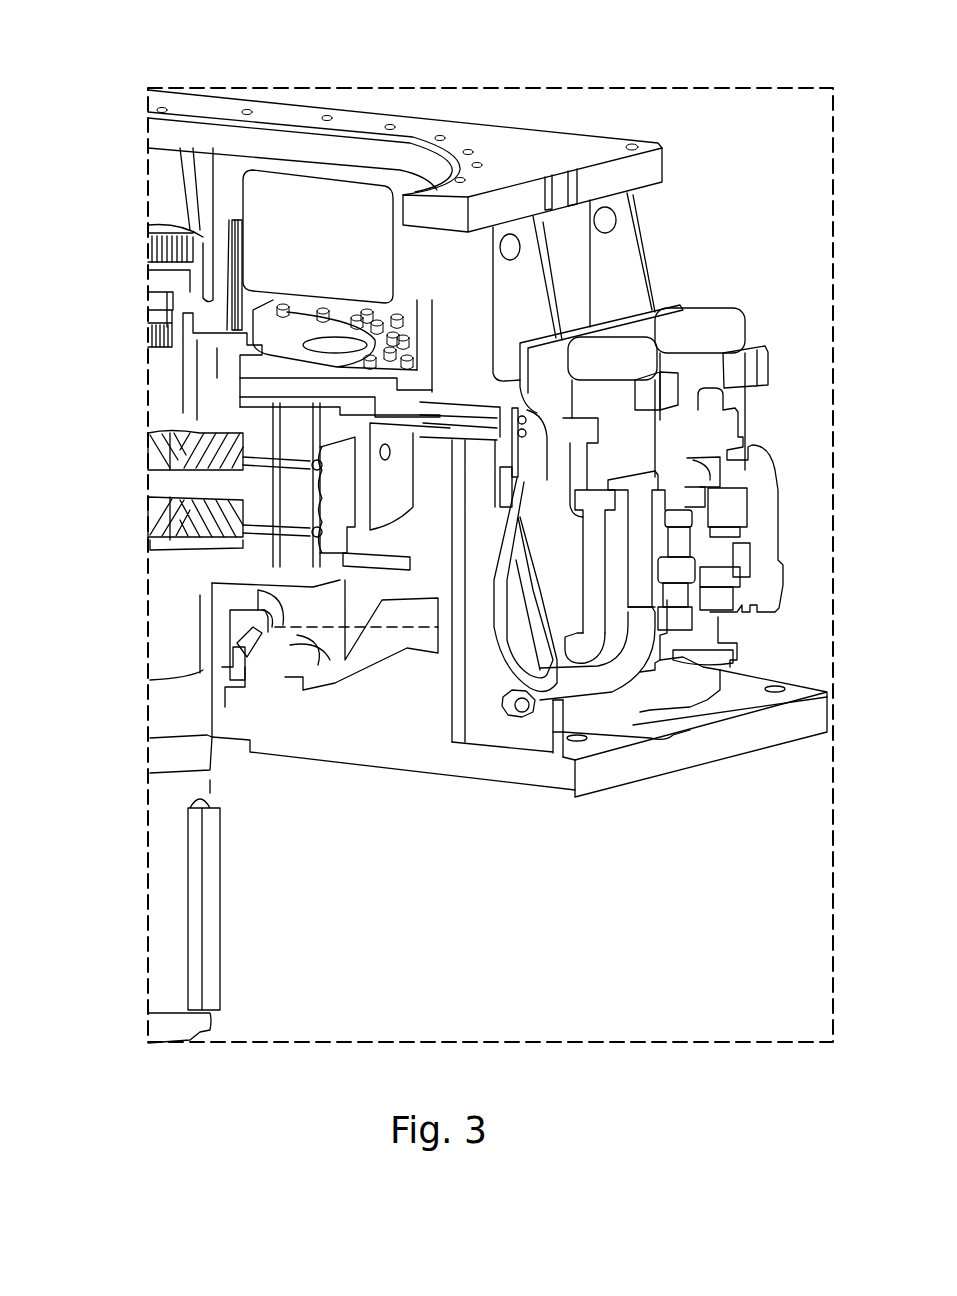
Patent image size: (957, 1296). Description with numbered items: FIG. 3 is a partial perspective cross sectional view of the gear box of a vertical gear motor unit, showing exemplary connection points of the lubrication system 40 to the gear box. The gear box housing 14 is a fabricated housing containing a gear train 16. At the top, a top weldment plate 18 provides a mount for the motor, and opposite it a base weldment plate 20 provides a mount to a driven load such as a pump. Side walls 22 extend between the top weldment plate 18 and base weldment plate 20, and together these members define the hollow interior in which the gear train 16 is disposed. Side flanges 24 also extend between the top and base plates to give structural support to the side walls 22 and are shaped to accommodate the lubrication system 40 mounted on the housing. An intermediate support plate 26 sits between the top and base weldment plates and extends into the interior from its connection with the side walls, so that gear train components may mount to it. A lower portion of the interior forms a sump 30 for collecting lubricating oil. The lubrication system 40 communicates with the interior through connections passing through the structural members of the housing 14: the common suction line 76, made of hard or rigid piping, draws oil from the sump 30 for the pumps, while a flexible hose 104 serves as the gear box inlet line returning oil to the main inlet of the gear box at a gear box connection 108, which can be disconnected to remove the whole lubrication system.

The gear box housing 14 is at (290, 75).
The gear train 16 is at (138, 290).
The top weldment plate 18 is at (662, 163).
The base weldment plate 20 is at (567, 784).
The side walls 22 is at (588, 303).
The side flanges 24 is at (550, 733).
The intermediate support plate 26 is at (477, 415).
The sump 30 is at (402, 628).
The lubrication system 40 is at (768, 426).
The common suction line 76 is at (662, 688).
The flexible hose 104 is at (507, 643).
The gear box connection 108 is at (508, 405).